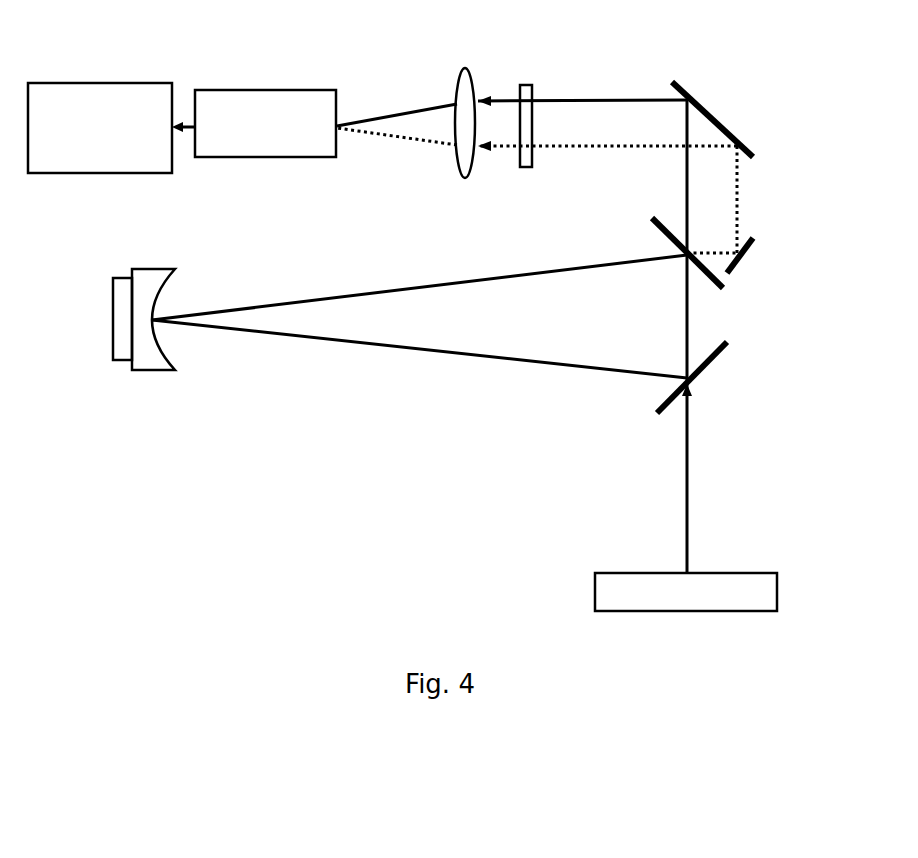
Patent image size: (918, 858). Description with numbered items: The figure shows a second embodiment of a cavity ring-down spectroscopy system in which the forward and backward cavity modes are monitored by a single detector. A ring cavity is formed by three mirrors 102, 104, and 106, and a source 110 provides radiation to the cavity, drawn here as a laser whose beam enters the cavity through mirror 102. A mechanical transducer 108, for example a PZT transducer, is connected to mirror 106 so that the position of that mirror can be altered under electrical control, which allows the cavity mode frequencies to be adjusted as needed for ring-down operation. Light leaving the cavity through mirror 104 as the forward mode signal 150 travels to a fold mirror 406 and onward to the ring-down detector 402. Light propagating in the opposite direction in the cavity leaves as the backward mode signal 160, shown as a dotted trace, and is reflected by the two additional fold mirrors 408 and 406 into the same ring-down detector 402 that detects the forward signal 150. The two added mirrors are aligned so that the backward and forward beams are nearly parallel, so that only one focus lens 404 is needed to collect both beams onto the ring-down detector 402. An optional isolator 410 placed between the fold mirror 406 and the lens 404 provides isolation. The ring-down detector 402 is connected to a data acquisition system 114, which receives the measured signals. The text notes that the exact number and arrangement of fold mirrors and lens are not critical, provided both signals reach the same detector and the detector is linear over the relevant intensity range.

The data acquisition system 114 is at (103, 82).
The ring-down detector 402 is at (272, 90).
The focus lens 404 is at (466, 68).
The isolator 410 is at (527, 85).
The fold mirror 406 is at (697, 97).
The forward mode signal 150 is at (687, 185).
The backward mode signal 160 is at (737, 185).
The mirror 104 is at (654, 230).
The fold mirror 408 is at (735, 273).
The mirror 102 is at (657, 406).
The mechanical transducer 108 is at (121, 362).
The mirror 106 is at (145, 372).
The source 110 is at (595, 598).